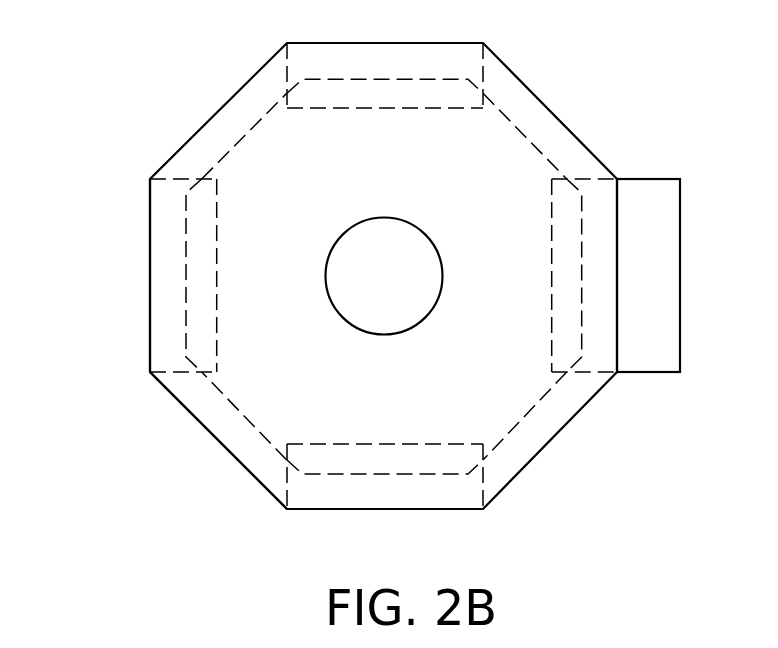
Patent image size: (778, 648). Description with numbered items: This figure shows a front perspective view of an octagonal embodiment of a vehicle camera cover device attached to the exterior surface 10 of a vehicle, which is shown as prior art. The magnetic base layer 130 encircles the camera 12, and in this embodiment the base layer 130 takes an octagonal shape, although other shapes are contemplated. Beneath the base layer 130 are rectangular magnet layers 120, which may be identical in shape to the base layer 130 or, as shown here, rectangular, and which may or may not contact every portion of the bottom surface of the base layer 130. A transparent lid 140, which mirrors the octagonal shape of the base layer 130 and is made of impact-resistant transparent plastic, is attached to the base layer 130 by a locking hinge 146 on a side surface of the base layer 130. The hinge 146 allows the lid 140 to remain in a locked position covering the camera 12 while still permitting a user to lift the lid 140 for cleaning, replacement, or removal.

The exterior surface 10 is at (135, 539).
The camera 12 is at (415, 262).
The magnet layer 120 is at (203, 195).
The base layer 130 is at (162, 250).
The transparent lid 140 is at (150, 324).
The locking hinge 146 is at (660, 232).